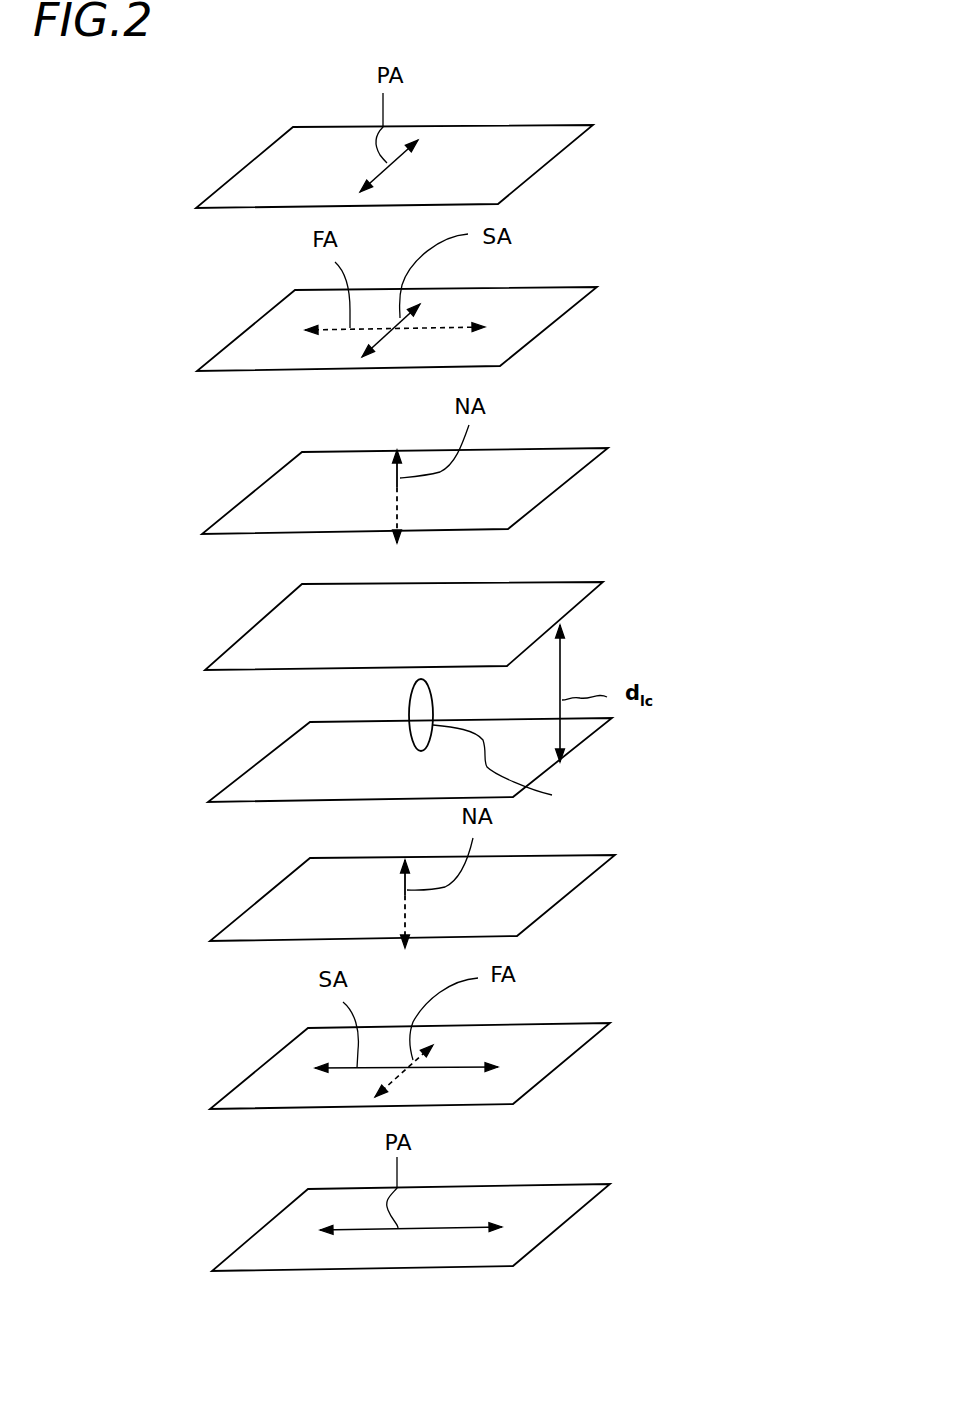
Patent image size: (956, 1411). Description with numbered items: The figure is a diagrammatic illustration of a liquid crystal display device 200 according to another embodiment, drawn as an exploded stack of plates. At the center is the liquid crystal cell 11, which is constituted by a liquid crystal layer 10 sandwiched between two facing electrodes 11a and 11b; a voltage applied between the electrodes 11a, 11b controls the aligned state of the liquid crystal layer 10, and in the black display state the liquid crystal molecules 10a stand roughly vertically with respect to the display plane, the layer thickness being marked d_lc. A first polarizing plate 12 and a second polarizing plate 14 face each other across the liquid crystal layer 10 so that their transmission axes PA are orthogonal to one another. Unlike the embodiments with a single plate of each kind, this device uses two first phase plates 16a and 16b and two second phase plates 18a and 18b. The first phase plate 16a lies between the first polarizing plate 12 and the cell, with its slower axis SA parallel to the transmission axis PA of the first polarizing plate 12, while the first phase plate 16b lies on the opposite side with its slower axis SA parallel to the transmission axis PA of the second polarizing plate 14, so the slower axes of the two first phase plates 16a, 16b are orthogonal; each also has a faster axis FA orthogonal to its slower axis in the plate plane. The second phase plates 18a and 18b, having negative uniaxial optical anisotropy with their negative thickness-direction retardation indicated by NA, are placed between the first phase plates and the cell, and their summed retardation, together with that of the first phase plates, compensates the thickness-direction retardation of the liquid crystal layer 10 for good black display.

The liquid crystal display device 200 is at (614, 92).
The first polarizing plate 12 is at (536, 172).
The first phase plate 16a is at (533, 340).
The second phase plate 18a is at (527, 515).
The liquid crystal cell 11 is at (366, 687).
The electrode 11a is at (243, 639).
The electrode 11b is at (403, 756).
The liquid crystal layer 10 is at (582, 658).
The liquid crystal molecule 10a is at (514, 767).
The second phase plate 18b is at (577, 888).
The first phase plate 16b is at (545, 1075).
The second polarizing plate 14 is at (555, 1230).